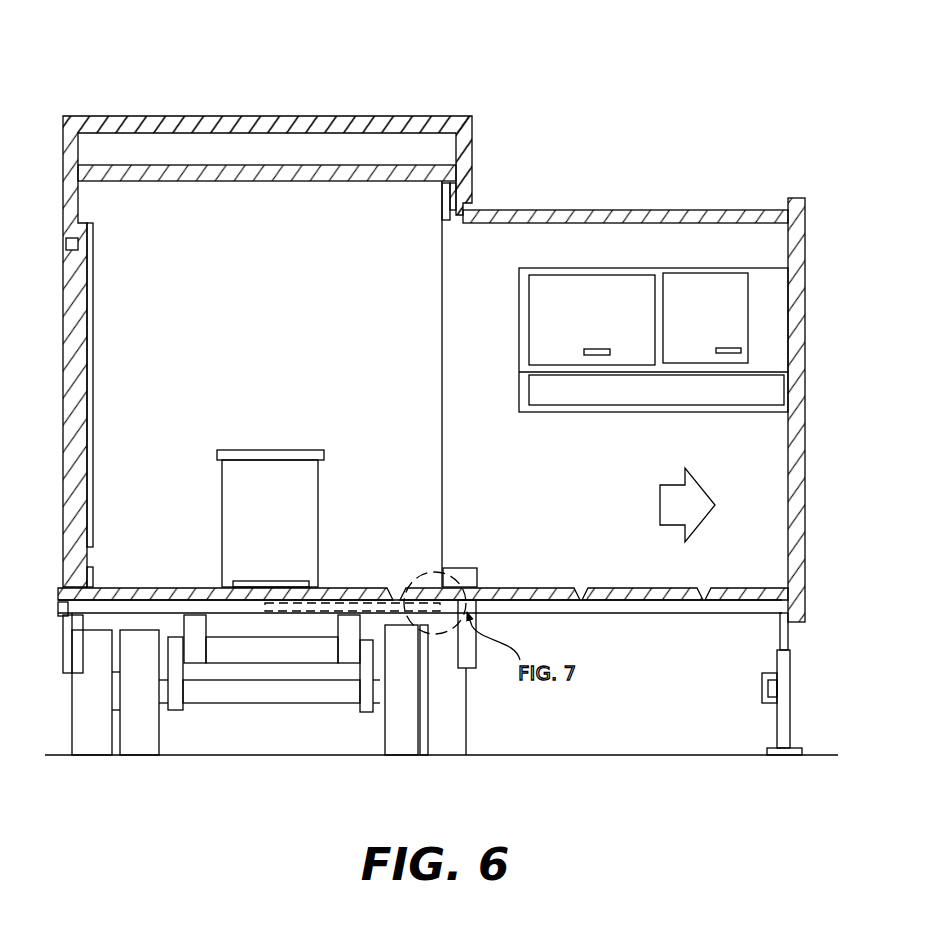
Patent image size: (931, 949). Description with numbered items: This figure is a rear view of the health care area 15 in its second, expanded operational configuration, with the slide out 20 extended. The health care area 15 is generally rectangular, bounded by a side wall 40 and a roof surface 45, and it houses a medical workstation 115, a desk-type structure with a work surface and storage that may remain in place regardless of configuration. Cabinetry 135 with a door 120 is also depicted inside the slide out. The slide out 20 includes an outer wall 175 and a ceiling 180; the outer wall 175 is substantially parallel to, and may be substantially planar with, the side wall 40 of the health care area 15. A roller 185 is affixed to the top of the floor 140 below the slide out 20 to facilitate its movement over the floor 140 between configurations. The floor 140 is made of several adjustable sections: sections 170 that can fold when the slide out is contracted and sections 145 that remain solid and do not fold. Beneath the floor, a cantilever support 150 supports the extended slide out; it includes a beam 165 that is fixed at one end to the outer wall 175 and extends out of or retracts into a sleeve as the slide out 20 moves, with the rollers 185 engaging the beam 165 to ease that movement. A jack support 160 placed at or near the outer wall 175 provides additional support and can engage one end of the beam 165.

The health care area 15 is at (301, 381).
The slide out 20 is at (588, 369).
The side wall 40 is at (472, 138).
The roof surface 45 is at (165, 116).
The medical workstation 115 is at (270, 480).
The cabinet door 120 is at (748, 300).
The cabinet 135 is at (579, 322).
The floor 140 is at (192, 582).
The non-folding floor section 145 is at (353, 587).
The cantilever support 150 is at (434, 612).
The jack support 160 is at (778, 720).
The beam 165 is at (423, 586).
The folding floor section 170 is at (620, 587).
The outer wall 175 is at (788, 440).
The ceiling 180 is at (607, 210).
The roller 185 is at (470, 560).